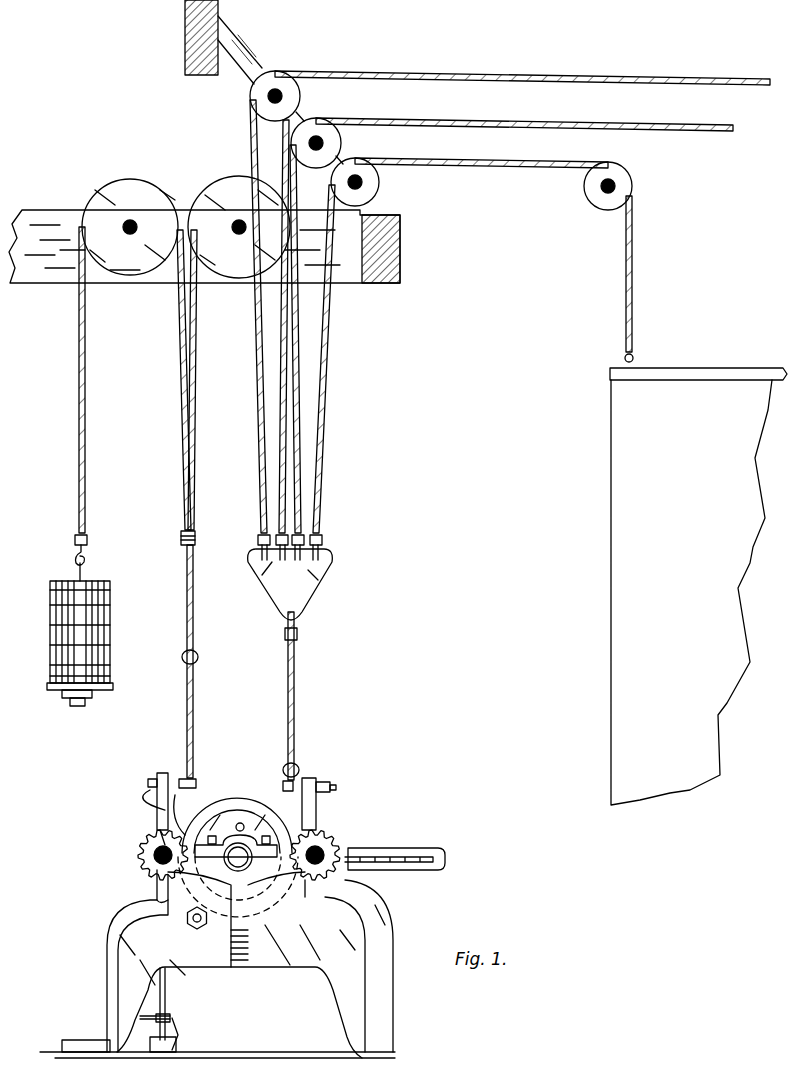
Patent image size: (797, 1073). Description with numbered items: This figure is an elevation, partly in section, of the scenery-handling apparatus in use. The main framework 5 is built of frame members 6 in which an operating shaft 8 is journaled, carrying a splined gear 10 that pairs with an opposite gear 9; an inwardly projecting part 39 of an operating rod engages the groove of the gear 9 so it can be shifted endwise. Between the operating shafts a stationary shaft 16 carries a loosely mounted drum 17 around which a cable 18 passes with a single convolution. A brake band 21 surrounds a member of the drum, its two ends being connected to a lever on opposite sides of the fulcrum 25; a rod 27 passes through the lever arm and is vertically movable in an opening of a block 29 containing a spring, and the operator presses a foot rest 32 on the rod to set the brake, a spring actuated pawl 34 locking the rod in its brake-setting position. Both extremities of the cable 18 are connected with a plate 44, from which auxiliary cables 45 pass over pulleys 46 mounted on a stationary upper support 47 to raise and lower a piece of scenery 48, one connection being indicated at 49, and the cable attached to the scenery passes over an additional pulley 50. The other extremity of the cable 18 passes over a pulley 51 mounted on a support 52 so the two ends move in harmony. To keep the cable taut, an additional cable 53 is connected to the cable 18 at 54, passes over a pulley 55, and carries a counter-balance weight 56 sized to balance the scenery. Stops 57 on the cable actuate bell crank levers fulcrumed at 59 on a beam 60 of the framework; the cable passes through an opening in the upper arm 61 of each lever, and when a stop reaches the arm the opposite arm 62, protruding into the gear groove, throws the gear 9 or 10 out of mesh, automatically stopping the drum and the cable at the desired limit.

The main framework 5 is at (217, 964).
The frame member 6 is at (295, 965).
The operating shaft 8 is at (150, 858).
The gear 9 is at (324, 851).
The gear 10 is at (153, 851).
The stationary shaft 16 is at (255, 900).
The drum 17 is at (237, 811).
The cable 18 is at (200, 327).
The brake band 21 is at (152, 800).
The fulcrum 25 is at (198, 930).
The rod 27 is at (166, 992).
The block 29 is at (176, 1047).
The foot rest 32 is at (172, 1016).
The pawl 34 is at (178, 1028).
The inwardly projecting part 39 is at (375, 857).
The plate 44 is at (318, 594).
The auxiliary cable 45 is at (500, 170).
The pulley 46 is at (280, 70).
The stationary upper support 47 is at (264, 82).
The piece of scenery 48 is at (698, 586).
The connection 49 is at (633, 358).
The additional pulley 50 is at (592, 200).
The pulley 51 is at (236, 185).
The support 52 is at (40, 210).
The additional cable 53 is at (178, 380).
The connection 54 is at (196, 535).
The pulley 55 is at (126, 283).
The counter-balance weight 56 is at (96, 643).
The stop 57 is at (182, 662).
The fulcrum 59 is at (196, 780).
The beam 60 is at (300, 785).
The upper arm 61 is at (165, 772).
The arm 62 is at (215, 790).